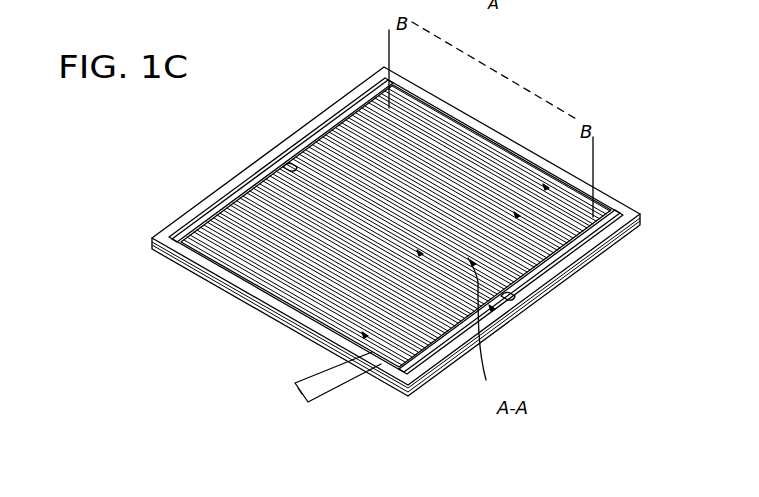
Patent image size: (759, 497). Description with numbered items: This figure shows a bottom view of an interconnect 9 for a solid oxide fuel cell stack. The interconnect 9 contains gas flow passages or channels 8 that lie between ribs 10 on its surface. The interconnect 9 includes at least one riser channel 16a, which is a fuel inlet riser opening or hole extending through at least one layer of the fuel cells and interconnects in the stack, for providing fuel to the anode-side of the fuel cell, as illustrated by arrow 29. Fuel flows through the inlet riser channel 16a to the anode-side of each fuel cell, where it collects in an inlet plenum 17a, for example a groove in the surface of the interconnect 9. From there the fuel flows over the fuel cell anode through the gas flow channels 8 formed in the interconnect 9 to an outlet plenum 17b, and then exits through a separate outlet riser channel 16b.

The gas flow channels 8 is at (331, 386).
The interconnect 9 is at (655, 208).
The ribs 10 is at (282, 300).
The riser channel 16a is at (284, 169).
The outlet riser channel 16b is at (516, 300).
The inlet plenum 17a is at (333, 130).
The outlet plenum 17b is at (548, 272).
The arrow 29 is at (433, 112).